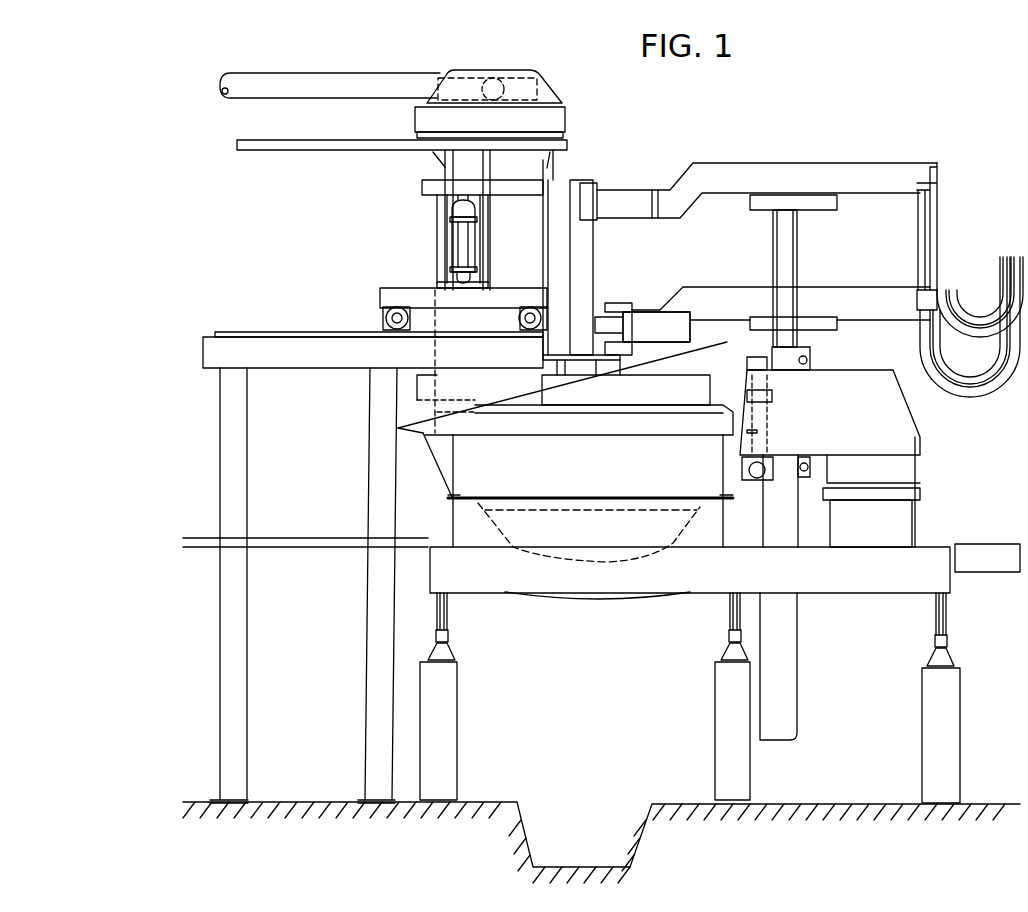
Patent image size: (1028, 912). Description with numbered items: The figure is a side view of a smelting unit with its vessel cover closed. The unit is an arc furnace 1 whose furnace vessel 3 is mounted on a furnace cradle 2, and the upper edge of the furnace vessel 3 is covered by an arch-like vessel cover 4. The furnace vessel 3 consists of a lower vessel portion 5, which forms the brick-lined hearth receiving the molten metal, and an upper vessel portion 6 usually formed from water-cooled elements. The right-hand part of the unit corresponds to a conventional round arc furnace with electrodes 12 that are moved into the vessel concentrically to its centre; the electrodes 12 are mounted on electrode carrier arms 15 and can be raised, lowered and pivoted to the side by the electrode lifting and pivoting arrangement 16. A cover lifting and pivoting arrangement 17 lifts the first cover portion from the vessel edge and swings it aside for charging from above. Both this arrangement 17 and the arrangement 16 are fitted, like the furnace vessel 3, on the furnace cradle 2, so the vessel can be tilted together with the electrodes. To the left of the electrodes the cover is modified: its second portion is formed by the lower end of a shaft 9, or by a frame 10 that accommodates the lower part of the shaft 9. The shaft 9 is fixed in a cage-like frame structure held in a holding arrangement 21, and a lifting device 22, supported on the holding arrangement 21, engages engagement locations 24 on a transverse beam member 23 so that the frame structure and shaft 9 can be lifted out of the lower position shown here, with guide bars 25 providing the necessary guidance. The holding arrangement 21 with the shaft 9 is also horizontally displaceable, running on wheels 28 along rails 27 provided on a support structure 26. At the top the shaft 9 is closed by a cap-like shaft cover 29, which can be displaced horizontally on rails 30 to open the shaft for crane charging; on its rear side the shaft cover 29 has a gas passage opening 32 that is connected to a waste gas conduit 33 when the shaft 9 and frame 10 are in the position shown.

The arc furnace 1 is at (657, 295).
The furnace cradle 2 is at (668, 576).
The furnace vessel 3 is at (432, 496).
The vessel cover 4 is at (528, 390).
The lower vessel portion 5 is at (708, 528).
The upper vessel portion 6 is at (443, 447).
The shaft 9 is at (540, 217).
The frame 10 is at (423, 394).
The electrodes 12 is at (580, 249).
The electrode carrier arms 15 is at (857, 180).
The electrode lifting and pivoting arrangement 16 is at (845, 360).
The cover lifting and pivoting arrangement 17 is at (900, 523).
The holding arrangement 21 is at (394, 295).
The lifting device 22 is at (460, 240).
The transverse beam member 23 is at (425, 187).
The engagement location 24 is at (440, 205).
The guide bars 25 is at (483, 248).
The support structure 26 is at (220, 352).
The rails 27 is at (247, 333).
The wheels 28 is at (384, 318).
The shaft cover 29 is at (545, 96).
The rails 30 is at (306, 146).
The gas passage opening 32 is at (494, 78).
The waste gas conduit 33 is at (324, 82).